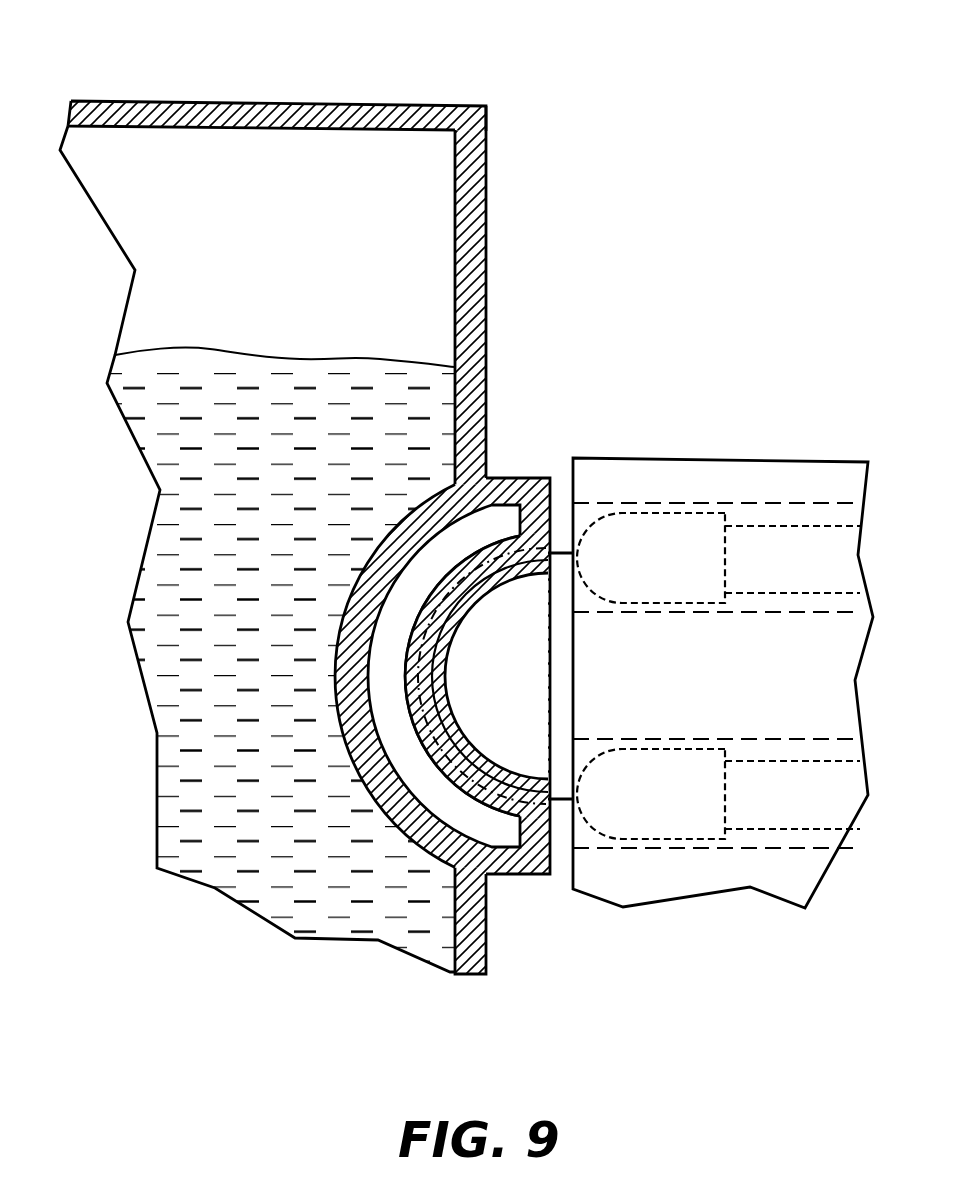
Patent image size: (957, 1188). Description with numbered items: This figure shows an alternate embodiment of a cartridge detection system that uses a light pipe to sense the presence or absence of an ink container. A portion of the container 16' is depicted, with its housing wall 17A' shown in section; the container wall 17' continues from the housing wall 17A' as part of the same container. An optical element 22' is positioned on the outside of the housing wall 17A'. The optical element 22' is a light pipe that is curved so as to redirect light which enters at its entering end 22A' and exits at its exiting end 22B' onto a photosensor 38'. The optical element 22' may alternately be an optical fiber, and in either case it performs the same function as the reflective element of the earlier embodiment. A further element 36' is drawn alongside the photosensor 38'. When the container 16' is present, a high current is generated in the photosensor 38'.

The container 16' is at (710, 465).
The tank 17' is at (273, 489).
The housing wall 17A' is at (524, 540).
The optical element 22' is at (430, 745).
The entering end 22A' is at (479, 676).
The exiting end 22B' is at (487, 676).
The connector 36' is at (716, 515).
The photosensor 38' is at (716, 751).